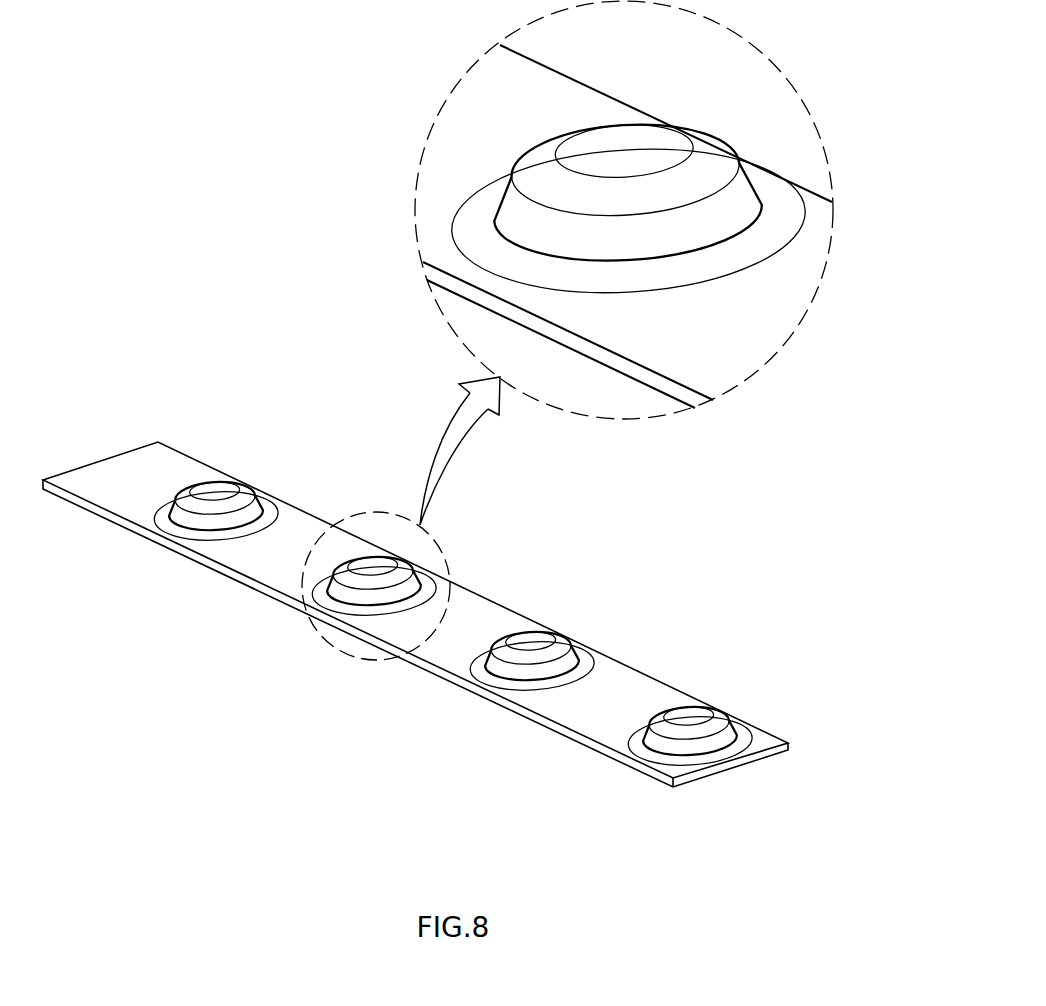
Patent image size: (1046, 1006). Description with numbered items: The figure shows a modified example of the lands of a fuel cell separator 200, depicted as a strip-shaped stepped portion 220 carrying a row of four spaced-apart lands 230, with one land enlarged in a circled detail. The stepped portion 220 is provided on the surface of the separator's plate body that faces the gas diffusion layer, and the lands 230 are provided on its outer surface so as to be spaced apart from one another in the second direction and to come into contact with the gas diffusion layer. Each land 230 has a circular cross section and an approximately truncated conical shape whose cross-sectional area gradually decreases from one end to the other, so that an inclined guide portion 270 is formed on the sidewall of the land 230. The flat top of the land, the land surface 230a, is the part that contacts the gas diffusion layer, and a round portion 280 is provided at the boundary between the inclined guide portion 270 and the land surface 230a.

The separator 200 is at (694, 636).
The stepped portion 220 is at (582, 715).
The land 230 is at (572, 632).
The land surface 230a is at (621, 140).
The round portion 280 is at (702, 148).
The inclined guide portion 270 is at (735, 182).